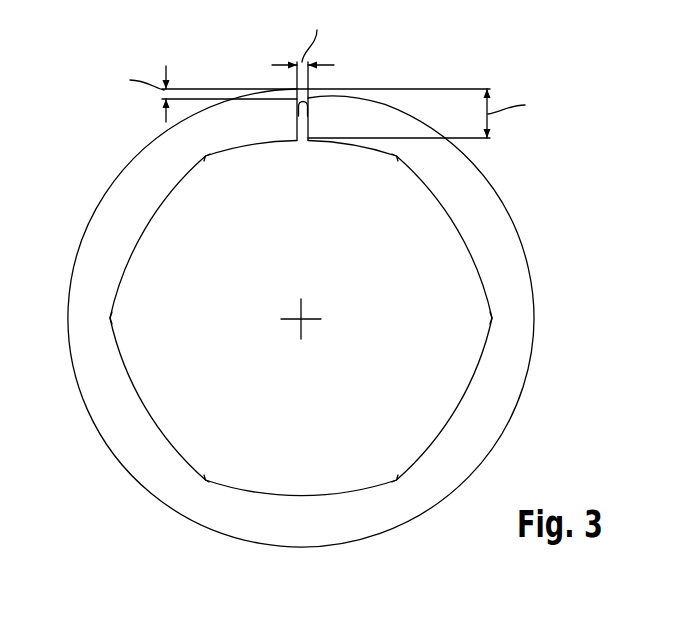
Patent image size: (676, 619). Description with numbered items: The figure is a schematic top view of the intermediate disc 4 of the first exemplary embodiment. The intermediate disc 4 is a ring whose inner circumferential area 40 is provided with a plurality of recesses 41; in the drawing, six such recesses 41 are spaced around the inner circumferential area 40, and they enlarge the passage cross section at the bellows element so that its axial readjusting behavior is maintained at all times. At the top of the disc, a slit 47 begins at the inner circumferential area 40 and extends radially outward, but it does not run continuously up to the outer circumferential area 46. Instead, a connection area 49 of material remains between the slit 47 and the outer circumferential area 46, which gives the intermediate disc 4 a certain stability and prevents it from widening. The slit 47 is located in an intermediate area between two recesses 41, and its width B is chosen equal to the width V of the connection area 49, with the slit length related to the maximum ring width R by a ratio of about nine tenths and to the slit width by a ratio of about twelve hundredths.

The intermediate disc 4 is at (99, 123).
The inner circumferential area 40 is at (452, 224).
The recess 41 is at (206, 157).
The outer circumferential area 46 is at (524, 248).
The slit 47 is at (305, 118).
The connection area 49 is at (320, 89).